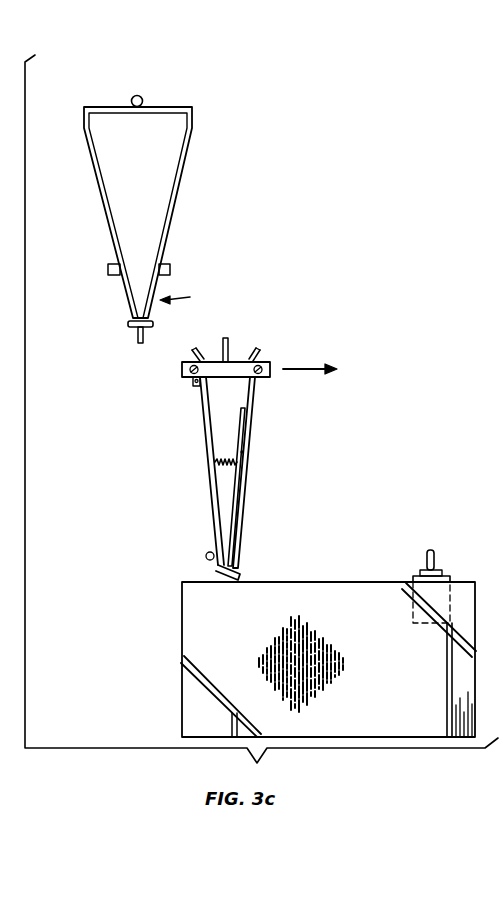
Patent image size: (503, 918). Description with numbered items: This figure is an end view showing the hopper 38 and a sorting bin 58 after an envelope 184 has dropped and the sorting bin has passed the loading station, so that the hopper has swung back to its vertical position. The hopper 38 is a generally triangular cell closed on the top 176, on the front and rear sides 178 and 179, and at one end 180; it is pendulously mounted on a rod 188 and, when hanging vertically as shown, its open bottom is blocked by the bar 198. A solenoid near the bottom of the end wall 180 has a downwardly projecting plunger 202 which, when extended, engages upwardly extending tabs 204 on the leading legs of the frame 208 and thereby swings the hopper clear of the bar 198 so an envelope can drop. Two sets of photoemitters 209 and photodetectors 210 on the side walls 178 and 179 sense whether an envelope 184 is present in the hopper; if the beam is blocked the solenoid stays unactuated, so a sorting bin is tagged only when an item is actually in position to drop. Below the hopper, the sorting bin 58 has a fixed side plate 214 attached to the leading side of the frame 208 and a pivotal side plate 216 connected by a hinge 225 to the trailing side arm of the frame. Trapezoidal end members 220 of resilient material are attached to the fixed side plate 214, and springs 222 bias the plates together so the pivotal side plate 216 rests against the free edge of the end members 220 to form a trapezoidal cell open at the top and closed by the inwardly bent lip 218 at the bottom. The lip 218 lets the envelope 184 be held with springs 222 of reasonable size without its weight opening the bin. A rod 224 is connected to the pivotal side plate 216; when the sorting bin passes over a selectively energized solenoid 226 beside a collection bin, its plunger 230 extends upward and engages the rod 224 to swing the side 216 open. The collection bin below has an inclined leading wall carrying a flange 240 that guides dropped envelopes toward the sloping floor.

The hopper 38 is at (198, 147).
The top 176 is at (157, 107).
The front side 178 is at (177, 196).
The rear side 179 is at (98, 190).
The end 180 is at (92, 139).
The rod 188 is at (134, 96).
The bar 198 is at (128, 323).
The plunger 202 is at (138, 338).
The tabs 204 is at (232, 348).
The frame 208 is at (182, 367).
The photoemitters 209 is at (171, 268).
The photodetectors 210 is at (108, 268).
The fixed side plate 214 is at (246, 505).
The pivotal side plate 216 is at (208, 504).
The lip 218 is at (218, 582).
The trapezoidal end members 220 is at (226, 484).
The springs 222 is at (216, 461).
The rod 224 is at (206, 557).
The hinge 225 is at (193, 388).
The solenoid 226 is at (418, 572).
The plunger 230 is at (433, 552).
The flange 240 is at (210, 680).
The sorting bin 58 is at (237, 498).
The envelope 184 is at (240, 452).